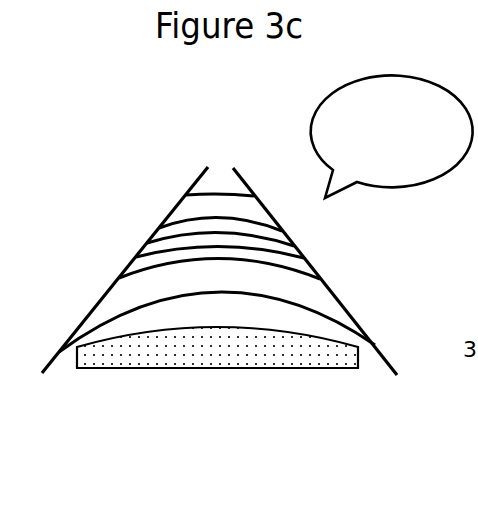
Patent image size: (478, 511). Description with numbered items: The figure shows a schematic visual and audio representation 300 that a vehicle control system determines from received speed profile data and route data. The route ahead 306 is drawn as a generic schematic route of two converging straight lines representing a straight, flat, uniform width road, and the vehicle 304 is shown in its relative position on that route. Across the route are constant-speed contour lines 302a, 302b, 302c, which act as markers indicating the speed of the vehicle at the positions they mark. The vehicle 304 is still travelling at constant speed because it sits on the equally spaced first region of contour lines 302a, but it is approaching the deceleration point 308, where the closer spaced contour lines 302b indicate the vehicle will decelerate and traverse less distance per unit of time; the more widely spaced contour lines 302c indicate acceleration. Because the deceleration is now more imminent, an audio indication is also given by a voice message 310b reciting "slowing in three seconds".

The representation 300 is at (229, 295).
The first region of contour lines 302a is at (323, 318).
The closer spaced contour lines 302b is at (153, 240).
The more widely spaced contour lines 302c is at (200, 196).
The vehicle 304 is at (272, 358).
The route ahead 306 is at (301, 253).
The deceleration point 308 is at (116, 278).
The voice message 310b is at (306, 123).